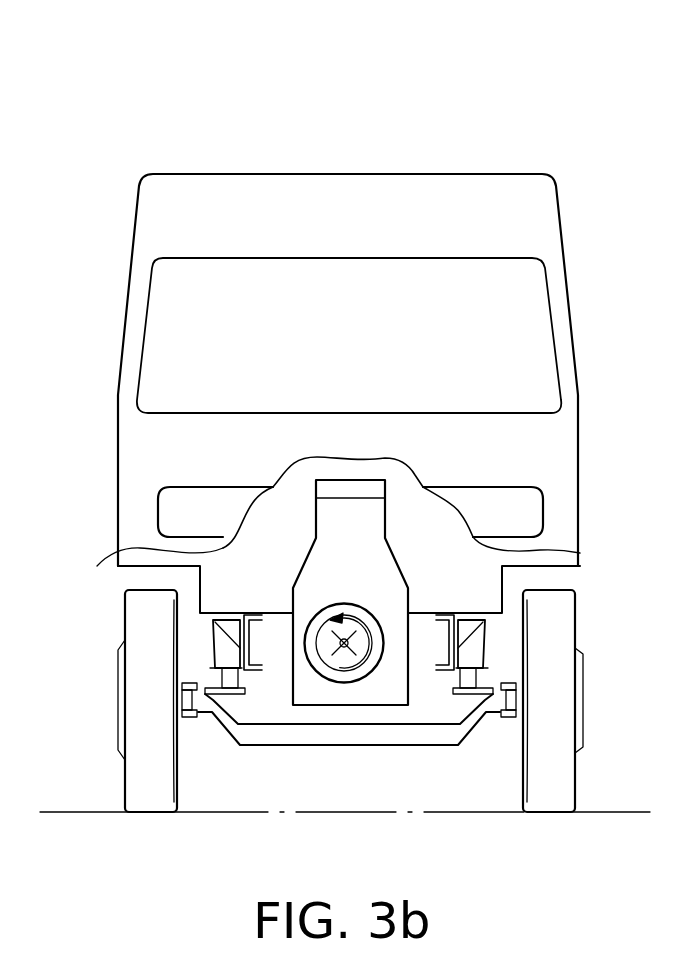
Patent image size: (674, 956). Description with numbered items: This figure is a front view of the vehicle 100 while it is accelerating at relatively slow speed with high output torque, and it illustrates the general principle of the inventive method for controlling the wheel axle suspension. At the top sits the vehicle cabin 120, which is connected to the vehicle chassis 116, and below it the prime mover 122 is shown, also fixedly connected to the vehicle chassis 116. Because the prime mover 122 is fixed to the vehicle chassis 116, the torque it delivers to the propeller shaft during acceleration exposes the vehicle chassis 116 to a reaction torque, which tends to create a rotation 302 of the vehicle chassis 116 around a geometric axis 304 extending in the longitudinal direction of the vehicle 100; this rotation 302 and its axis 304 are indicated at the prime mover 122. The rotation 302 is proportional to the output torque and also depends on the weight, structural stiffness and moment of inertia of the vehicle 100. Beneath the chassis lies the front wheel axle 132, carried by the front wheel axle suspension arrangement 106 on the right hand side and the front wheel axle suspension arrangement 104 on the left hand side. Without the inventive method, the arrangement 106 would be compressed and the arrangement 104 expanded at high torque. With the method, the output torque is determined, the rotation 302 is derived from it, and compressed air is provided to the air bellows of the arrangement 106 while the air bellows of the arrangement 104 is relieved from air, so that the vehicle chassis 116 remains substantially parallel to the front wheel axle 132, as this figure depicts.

The vehicle 100 is at (549, 126).
The vehicle cabin 120 is at (565, 222).
The prime mover 122 is at (387, 518).
The vehicle chassis 116 is at (250, 593).
The front wheel axle suspension arrangement 106 is at (227, 650).
The front wheel axle suspension arrangement 104 is at (472, 650).
The front wheel axle 132 is at (273, 733).
The rotation 302 is at (367, 660).
The geometric axis 304 is at (344, 645).